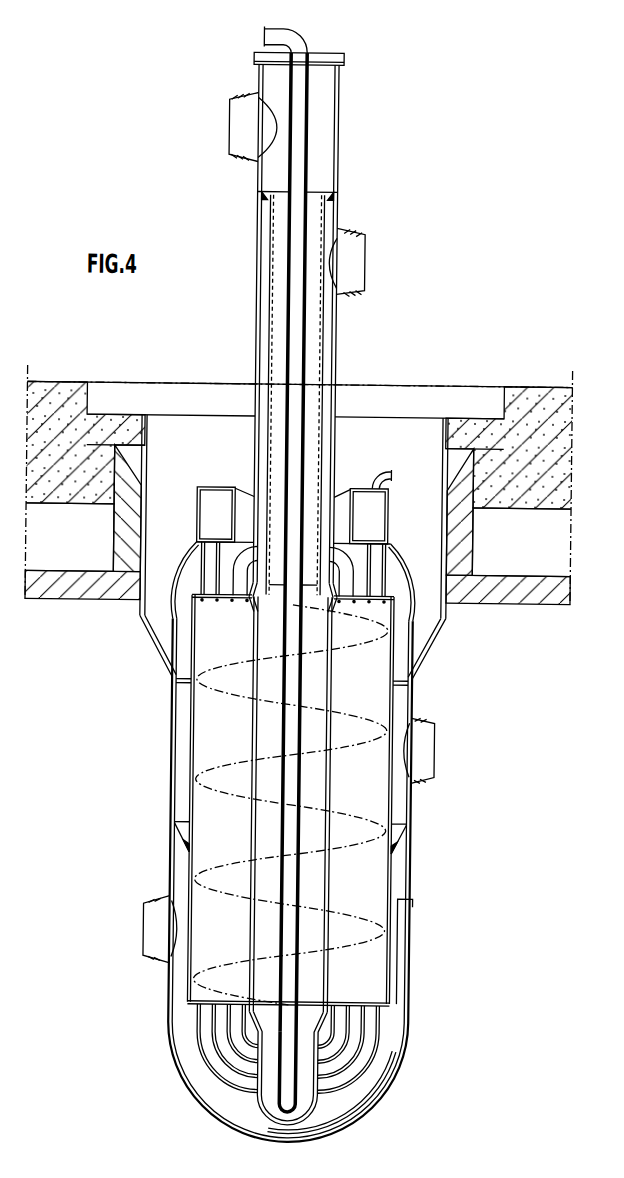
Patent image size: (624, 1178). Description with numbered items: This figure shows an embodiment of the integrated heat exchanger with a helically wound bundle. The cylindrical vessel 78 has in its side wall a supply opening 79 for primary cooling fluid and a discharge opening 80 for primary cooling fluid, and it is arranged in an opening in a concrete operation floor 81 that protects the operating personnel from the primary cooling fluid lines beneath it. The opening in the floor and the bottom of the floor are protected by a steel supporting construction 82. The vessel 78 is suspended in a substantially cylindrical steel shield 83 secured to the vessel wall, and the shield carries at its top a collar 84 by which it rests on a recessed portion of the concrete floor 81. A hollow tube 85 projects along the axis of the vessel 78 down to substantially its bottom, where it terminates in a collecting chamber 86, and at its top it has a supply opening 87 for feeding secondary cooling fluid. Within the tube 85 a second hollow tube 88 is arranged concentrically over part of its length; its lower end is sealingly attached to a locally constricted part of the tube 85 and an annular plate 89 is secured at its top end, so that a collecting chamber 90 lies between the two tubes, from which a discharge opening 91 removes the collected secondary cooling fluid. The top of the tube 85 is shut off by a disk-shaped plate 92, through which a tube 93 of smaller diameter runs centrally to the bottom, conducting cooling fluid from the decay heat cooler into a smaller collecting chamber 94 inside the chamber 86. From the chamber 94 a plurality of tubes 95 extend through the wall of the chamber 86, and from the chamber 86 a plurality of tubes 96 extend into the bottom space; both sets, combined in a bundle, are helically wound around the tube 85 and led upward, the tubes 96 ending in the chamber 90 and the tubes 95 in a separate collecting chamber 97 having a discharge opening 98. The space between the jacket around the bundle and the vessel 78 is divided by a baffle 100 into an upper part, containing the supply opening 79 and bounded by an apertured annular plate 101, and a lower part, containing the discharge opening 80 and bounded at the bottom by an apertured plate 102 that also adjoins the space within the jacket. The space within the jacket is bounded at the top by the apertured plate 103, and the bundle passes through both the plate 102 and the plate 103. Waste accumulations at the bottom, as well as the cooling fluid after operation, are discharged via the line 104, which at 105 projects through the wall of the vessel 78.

The cylindrical vessel 78 is at (173, 768).
The supply opening 79 is at (418, 752).
The discharge opening 80 is at (156, 925).
The concrete operation floor 81 is at (541, 396).
The steel supporting construction 82 is at (490, 590).
The cylindrical shield 83 is at (442, 468).
The collar 84 is at (467, 432).
The hollow tube 85 is at (335, 807).
The collecting chamber 86 is at (288, 1073).
The supply opening 87 is at (245, 133).
The second hollow tube 88 is at (268, 297).
The annular plate 89 is at (331, 192).
The collecting chamber 90 is at (257, 335).
The discharge opening 91 is at (349, 293).
The disk-shaped plate 92 is at (325, 64).
The tube 93 is at (303, 364).
The collecting chamber 94 is at (357, 1113).
The tubes 95 is at (389, 1030).
The tubes 96 is at (330, 1048).
The separate collecting chamber 97 is at (385, 512).
The discharge opening 98 is at (380, 470).
The baffle 100 is at (402, 843).
The annular plate 101 is at (184, 686).
The plate 102 is at (382, 1003).
The apertured plate 103 is at (204, 598).
The line 104 is at (340, 1122).
The wall penetration 105 is at (417, 902).